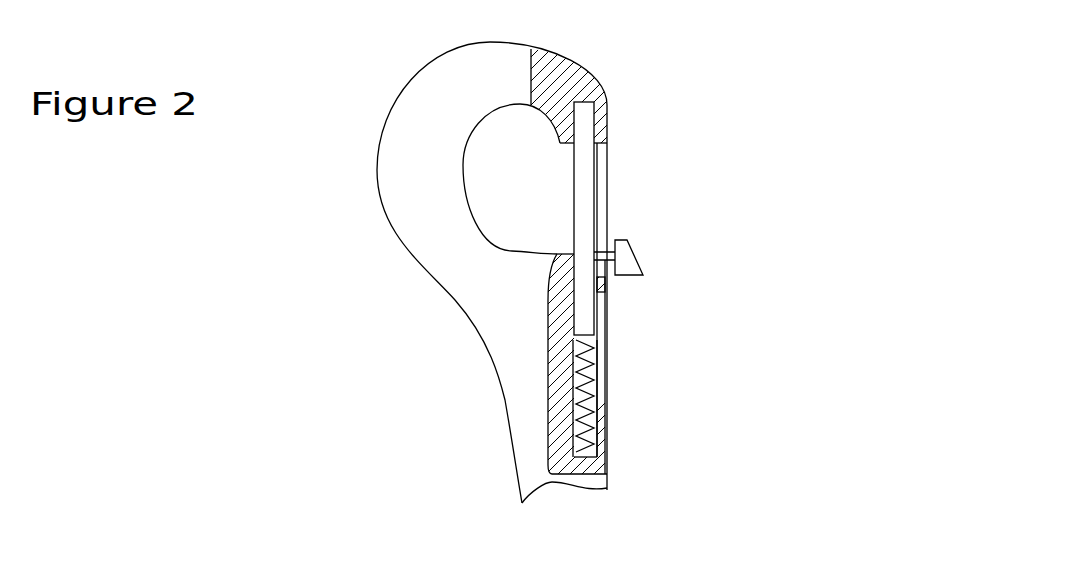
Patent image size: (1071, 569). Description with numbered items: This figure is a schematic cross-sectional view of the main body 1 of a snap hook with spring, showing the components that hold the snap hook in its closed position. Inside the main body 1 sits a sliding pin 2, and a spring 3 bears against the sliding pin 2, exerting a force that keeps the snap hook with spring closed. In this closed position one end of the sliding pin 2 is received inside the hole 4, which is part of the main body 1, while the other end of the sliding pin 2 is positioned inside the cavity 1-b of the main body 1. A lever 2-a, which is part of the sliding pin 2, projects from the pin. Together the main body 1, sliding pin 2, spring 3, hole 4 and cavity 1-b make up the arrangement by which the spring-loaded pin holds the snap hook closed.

The main body 1 is at (468, 90).
The cavity 1-b is at (588, 378).
The sliding pin 2 is at (580, 223).
The lever 2-a is at (627, 255).
The spring 3 is at (588, 365).
The hole 4 is at (603, 125).